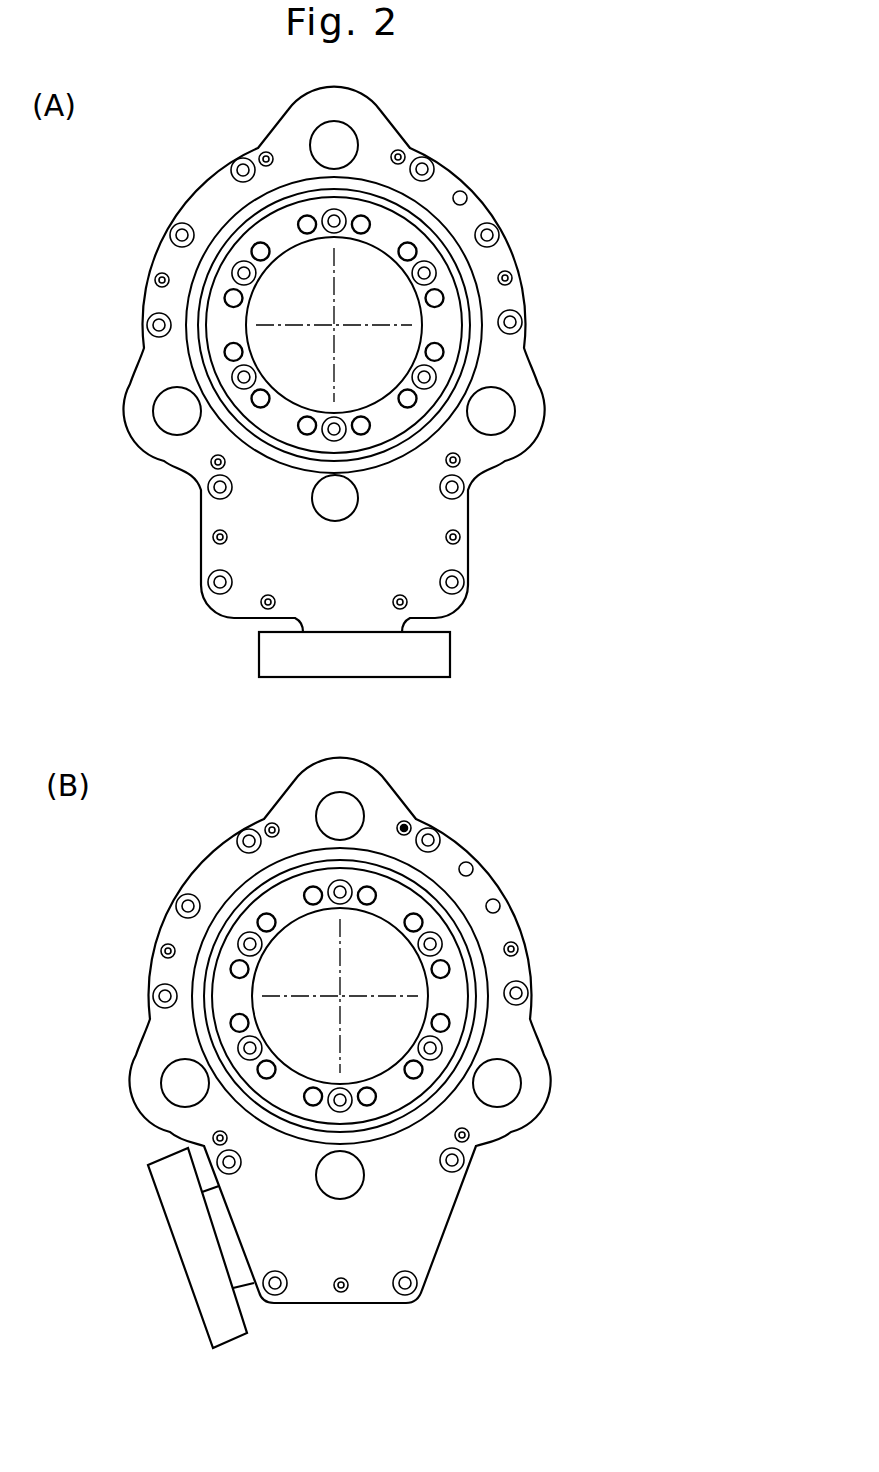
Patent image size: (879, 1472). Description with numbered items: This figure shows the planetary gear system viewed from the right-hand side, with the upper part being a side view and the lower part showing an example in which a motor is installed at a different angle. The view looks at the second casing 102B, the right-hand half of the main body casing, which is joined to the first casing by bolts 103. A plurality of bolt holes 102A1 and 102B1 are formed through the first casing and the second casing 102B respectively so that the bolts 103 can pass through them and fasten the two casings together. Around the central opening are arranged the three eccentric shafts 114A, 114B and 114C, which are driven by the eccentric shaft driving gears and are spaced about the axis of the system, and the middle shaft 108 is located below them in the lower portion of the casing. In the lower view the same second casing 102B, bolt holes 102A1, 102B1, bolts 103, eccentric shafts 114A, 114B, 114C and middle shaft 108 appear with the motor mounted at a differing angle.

The second casing 102B is at (472, 212).
The bolt holes 102A1 is at (402, 151).
The bolt holes 102B1 is at (434, 168).
The bolts 103 is at (408, 827).
The eccentric shaft 114A is at (322, 145).
The eccentric shaft 114B is at (498, 420).
The eccentric shaft 114C is at (172, 423).
The middle shaft 108 is at (327, 505).